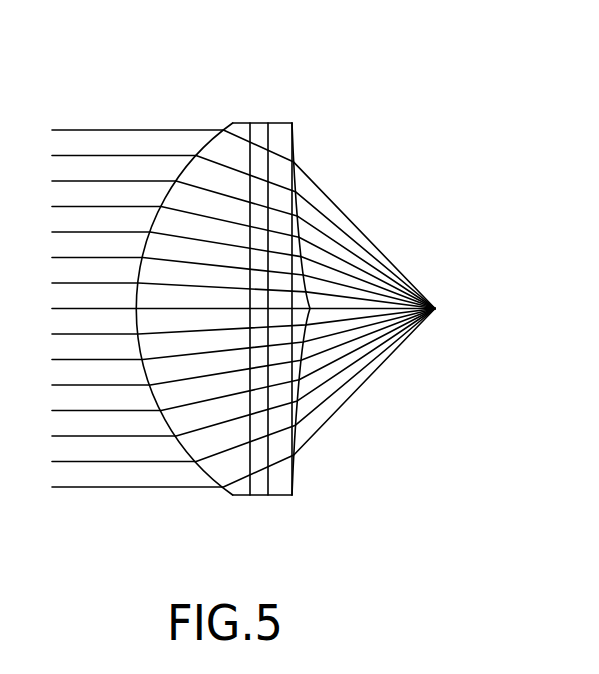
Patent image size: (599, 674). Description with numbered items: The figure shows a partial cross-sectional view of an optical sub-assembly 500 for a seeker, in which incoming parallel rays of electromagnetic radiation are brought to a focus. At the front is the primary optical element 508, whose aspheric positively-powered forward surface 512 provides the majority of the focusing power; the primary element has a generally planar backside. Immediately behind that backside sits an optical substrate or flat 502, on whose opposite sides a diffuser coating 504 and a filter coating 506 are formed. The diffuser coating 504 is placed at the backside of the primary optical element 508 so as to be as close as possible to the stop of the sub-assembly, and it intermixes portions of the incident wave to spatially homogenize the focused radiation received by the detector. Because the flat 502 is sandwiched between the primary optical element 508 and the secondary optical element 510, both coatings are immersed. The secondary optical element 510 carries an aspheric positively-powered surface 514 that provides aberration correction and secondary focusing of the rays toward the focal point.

The optical sub-assembly 500 is at (400, 80).
The optical substrate or flat 502 is at (263, 127).
The diffuser coating 504 is at (241, 152).
The filter coating 506 is at (288, 158).
The primary optical element 508 is at (217, 428).
The secondary optical element 510 is at (294, 421).
The aspheric positively-powered forward surface 512 is at (170, 425).
The aspheric positively-powered surface 514 is at (308, 346).